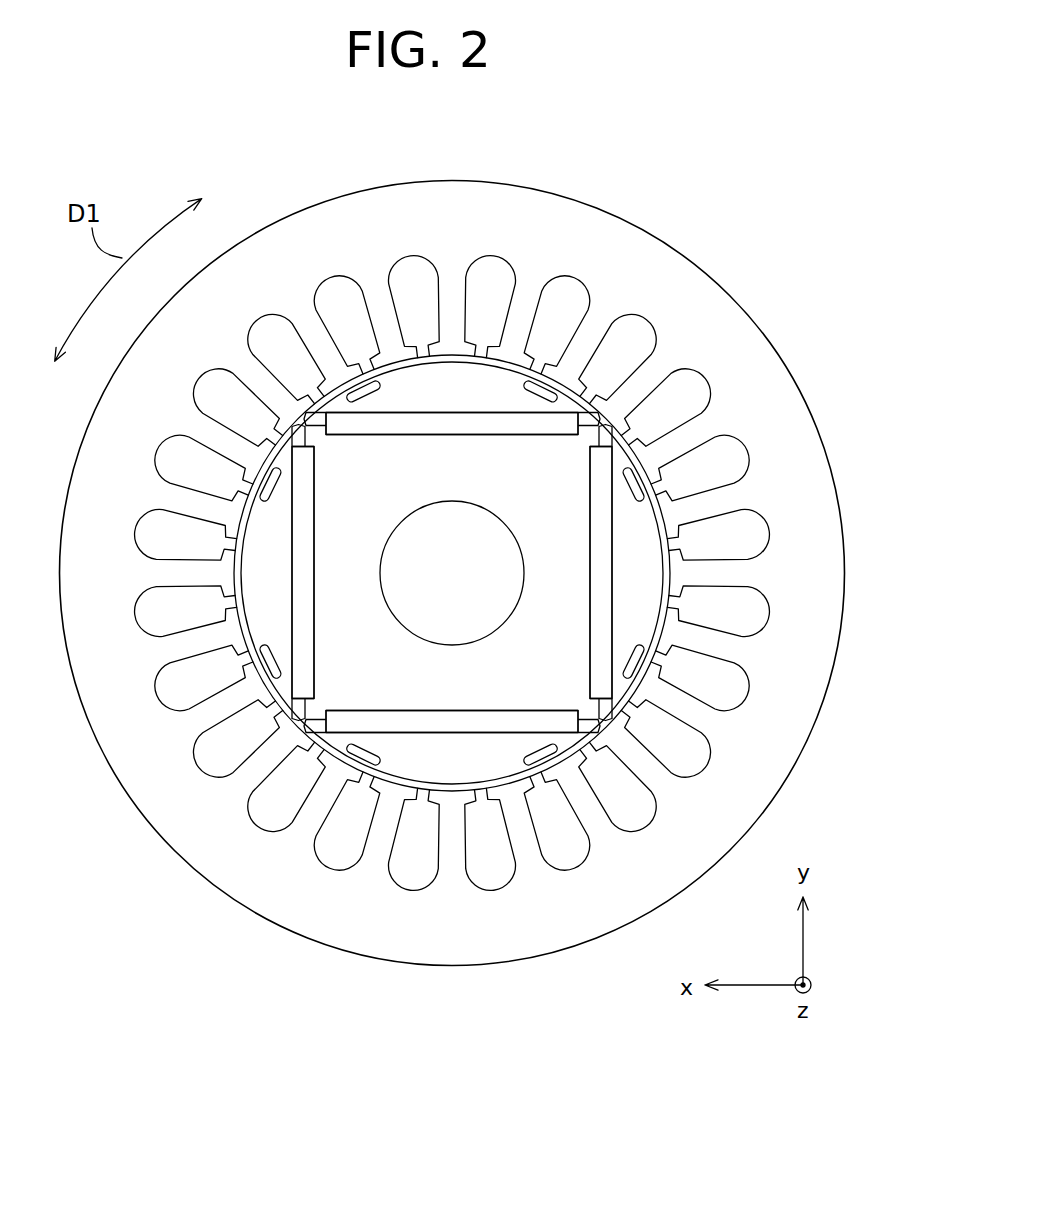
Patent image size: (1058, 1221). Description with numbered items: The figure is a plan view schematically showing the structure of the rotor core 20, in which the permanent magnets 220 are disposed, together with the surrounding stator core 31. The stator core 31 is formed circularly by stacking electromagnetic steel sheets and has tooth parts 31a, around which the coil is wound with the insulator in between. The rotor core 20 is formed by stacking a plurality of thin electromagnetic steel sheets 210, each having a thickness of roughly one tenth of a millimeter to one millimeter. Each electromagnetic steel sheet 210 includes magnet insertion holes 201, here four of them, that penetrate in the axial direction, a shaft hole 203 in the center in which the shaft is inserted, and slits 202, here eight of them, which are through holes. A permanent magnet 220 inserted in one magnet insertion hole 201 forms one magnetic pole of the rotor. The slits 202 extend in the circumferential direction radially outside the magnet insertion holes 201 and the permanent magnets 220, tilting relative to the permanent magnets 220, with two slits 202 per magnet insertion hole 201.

The rotor core 20 is at (453, 795).
The stator core 31 is at (452, 180).
The tooth part 31a is at (520, 322).
The magnet insertion hole 201 is at (395, 710).
The slit 202 is at (635, 640).
The shaft hole 203 is at (452, 648).
The electromagnetic steel sheet 210 is at (653, 600).
The permanent magnet 220 is at (517, 725).